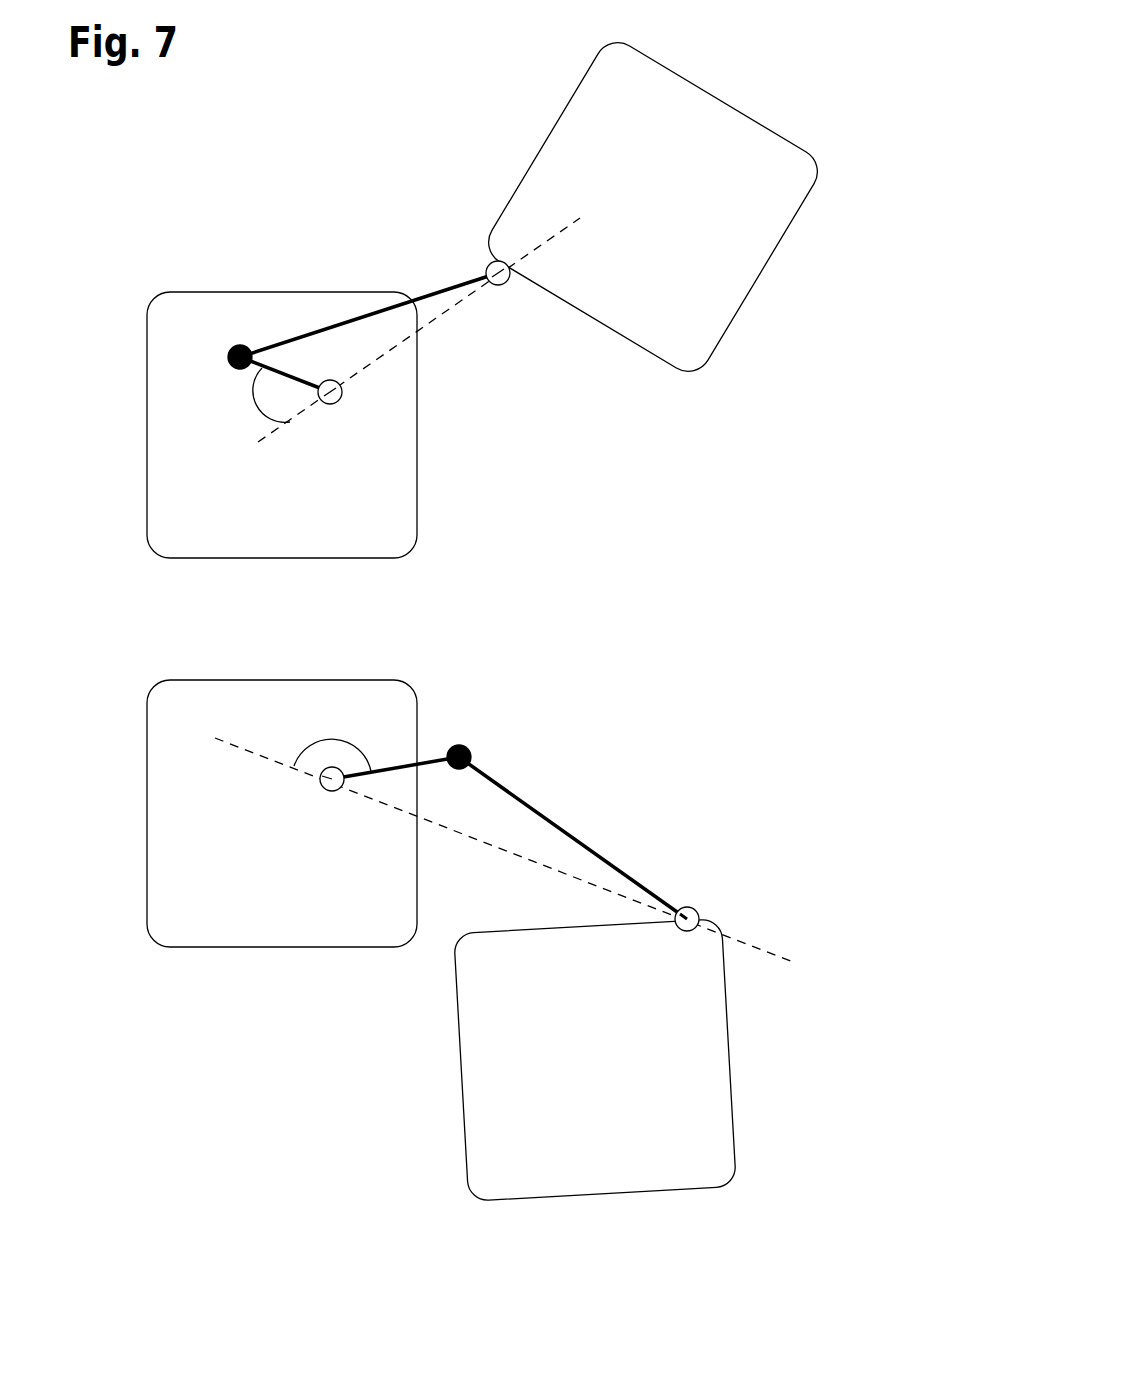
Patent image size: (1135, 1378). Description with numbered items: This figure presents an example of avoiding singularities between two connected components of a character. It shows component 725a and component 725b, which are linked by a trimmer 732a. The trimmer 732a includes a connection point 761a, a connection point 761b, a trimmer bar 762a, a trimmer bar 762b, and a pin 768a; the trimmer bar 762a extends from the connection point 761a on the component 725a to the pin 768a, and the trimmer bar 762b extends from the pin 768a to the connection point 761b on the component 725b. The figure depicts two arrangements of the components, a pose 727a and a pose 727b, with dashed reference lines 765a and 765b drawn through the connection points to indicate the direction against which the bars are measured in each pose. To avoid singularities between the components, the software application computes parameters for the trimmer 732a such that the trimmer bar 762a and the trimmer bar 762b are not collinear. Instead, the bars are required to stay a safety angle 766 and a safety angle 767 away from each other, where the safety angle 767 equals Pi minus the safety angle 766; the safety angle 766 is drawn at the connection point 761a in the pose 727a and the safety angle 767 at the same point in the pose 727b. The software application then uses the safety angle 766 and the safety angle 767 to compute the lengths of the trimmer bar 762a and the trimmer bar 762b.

The component 725a is at (305, 547).
The component 725b is at (691, 204).
The pose 727a is at (873, 78).
The pose 727b is at (883, 621).
The trimmer 732a is at (504, 449).
The connection point 761a is at (346, 404).
The connection point 761b is at (508, 287).
The trimmer bar 762a is at (304, 374).
The trimmer bar 762b is at (421, 294).
The first reference axis 765a is at (269, 446).
The second reference axis 765b is at (224, 744).
The safety angle 766 is at (252, 401).
The safety angle 767 is at (352, 744).
The pin 768a is at (226, 342).